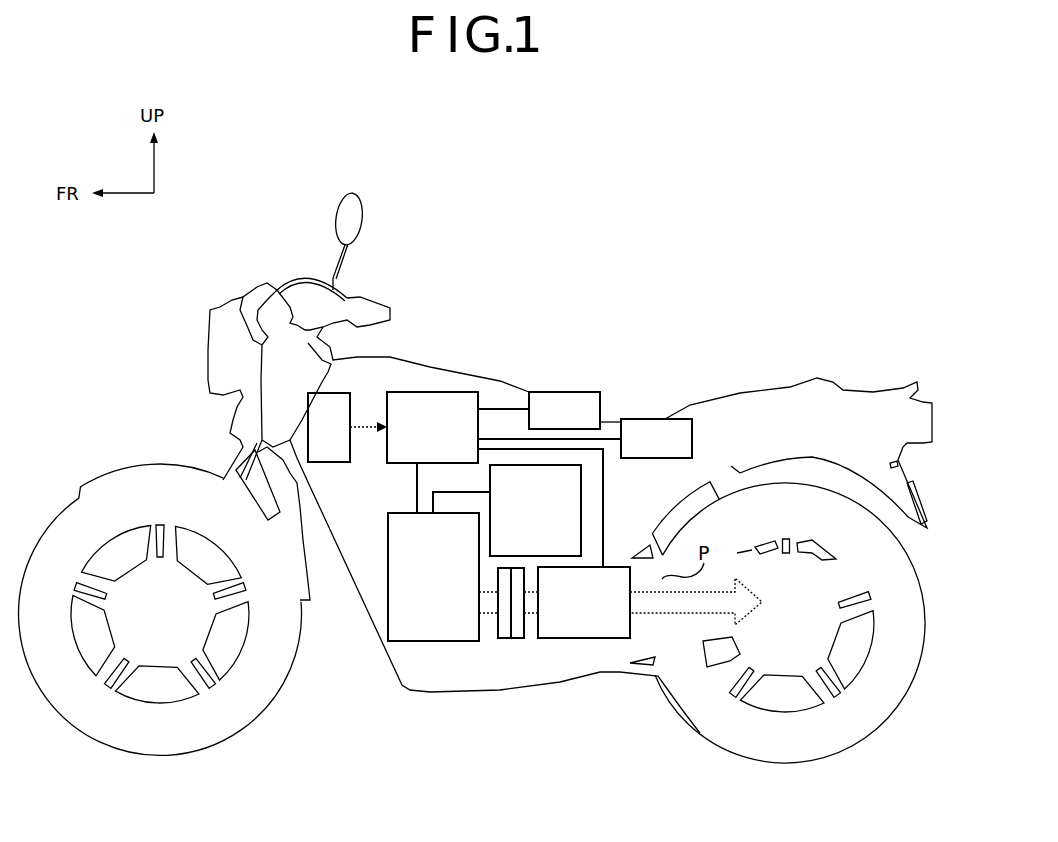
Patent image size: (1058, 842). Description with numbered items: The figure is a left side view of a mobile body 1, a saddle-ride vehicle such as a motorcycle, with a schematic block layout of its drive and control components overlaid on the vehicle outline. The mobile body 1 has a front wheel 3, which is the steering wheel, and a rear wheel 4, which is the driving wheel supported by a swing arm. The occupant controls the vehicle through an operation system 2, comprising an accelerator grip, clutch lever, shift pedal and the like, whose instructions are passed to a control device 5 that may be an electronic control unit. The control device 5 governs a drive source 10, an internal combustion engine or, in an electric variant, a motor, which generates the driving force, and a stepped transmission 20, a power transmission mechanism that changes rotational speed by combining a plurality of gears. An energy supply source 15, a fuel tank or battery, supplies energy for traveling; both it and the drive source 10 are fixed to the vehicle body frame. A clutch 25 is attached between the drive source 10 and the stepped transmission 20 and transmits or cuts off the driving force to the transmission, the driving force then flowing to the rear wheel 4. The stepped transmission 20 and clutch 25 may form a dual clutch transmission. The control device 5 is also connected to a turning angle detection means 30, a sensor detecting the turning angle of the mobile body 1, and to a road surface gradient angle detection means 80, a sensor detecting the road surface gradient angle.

The mobile body 1 is at (541, 283).
The operation system 2 is at (336, 437).
The front wheel 3 is at (53, 522).
The rear wheel 4 is at (921, 662).
The control device 5 is at (440, 438).
The drive source 10 is at (447, 587).
The energy supply source 15 is at (549, 520).
The stepped transmission 20 is at (597, 612).
The clutch 25 is at (513, 641).
The turning angle detection means 30 is at (578, 420).
The road surface gradient angle detection means 80 is at (670, 448).